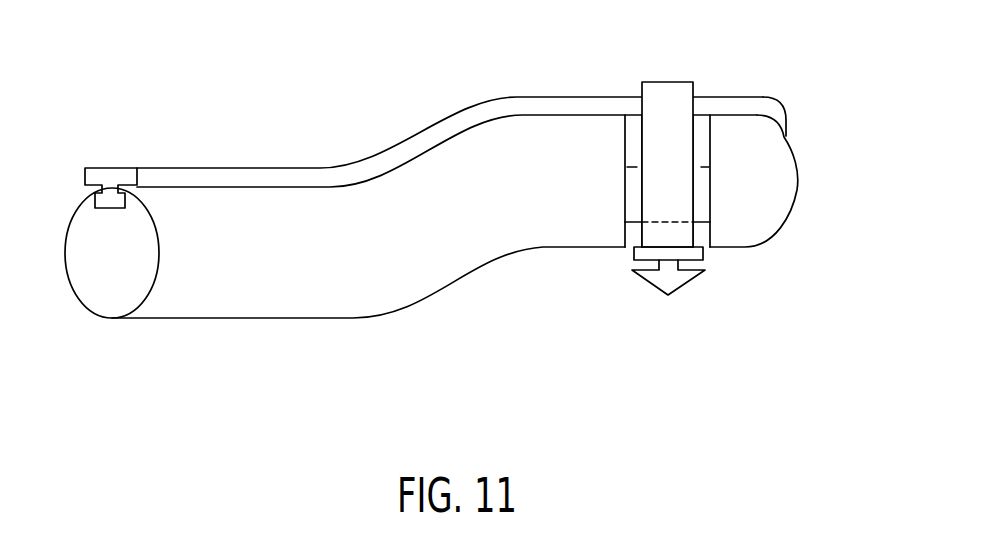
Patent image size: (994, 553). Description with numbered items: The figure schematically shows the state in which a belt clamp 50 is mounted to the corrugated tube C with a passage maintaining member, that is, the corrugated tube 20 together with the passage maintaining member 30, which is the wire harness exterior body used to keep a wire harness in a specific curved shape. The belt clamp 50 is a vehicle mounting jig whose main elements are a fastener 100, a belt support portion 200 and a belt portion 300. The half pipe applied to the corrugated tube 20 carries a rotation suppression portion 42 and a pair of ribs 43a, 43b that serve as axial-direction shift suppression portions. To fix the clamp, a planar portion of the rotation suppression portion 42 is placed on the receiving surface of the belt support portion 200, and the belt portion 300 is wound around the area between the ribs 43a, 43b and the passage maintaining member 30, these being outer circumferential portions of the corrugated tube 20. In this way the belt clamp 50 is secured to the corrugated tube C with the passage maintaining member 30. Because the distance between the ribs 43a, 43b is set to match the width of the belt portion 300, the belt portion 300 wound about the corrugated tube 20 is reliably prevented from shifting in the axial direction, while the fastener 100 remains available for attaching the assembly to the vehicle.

The corrugated tube with passage maintaining member c is at (168, 102).
The corrugated tube 20 is at (233, 343).
The passage maintaining member 30 is at (240, 167).
The belt clamp 50 is at (693, 65).
The rotation suppression portion 42 is at (633, 233).
The rib 43a is at (627, 167).
The rib 43b is at (710, 167).
The fastener 100 is at (690, 286).
The belt support portion 200 is at (705, 255).
The belt portion 300 is at (666, 81).